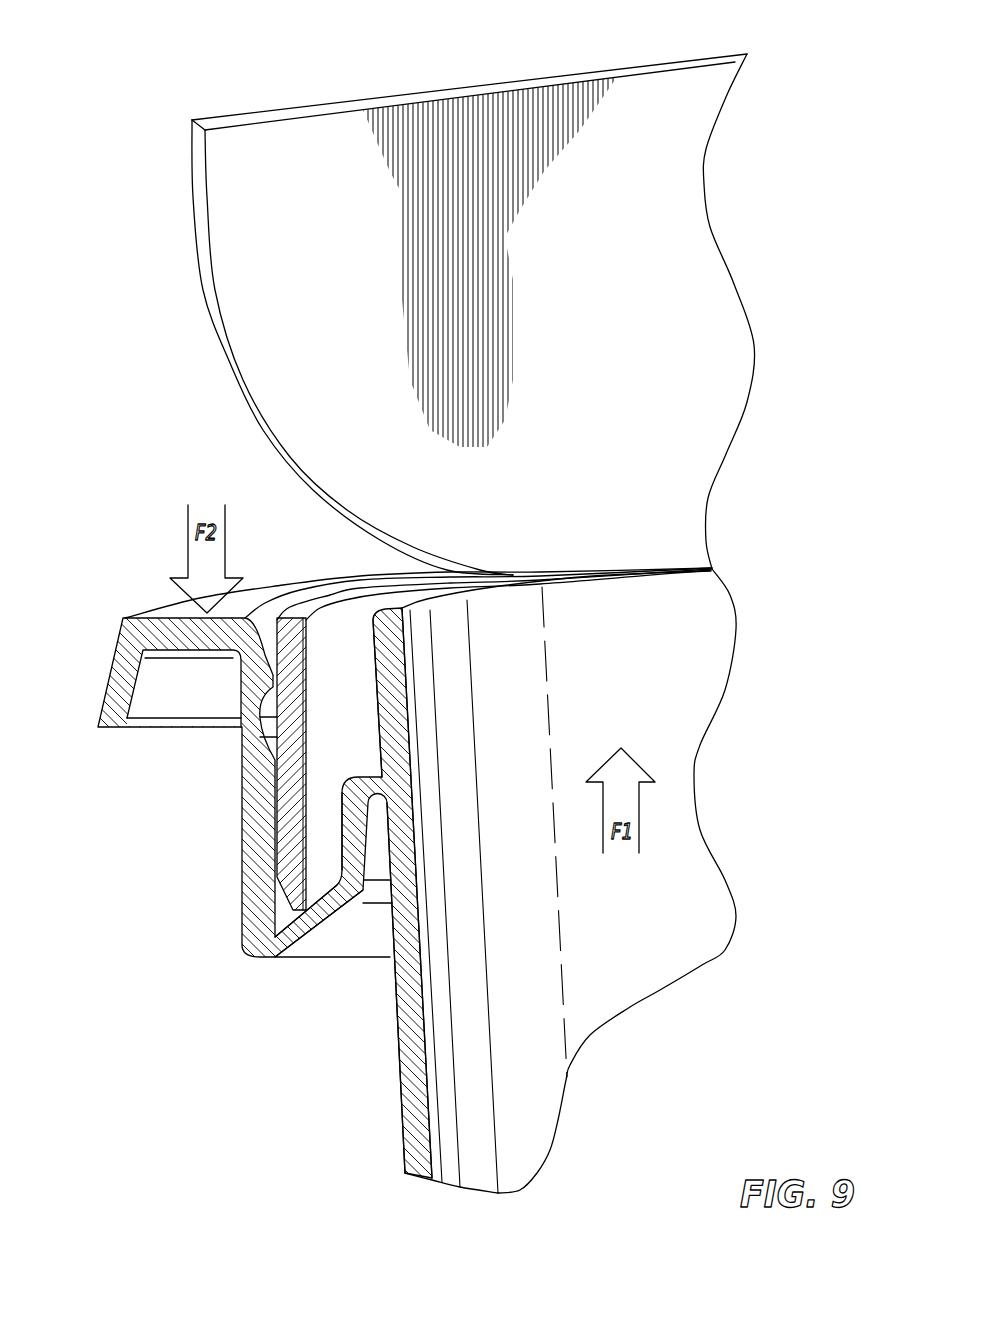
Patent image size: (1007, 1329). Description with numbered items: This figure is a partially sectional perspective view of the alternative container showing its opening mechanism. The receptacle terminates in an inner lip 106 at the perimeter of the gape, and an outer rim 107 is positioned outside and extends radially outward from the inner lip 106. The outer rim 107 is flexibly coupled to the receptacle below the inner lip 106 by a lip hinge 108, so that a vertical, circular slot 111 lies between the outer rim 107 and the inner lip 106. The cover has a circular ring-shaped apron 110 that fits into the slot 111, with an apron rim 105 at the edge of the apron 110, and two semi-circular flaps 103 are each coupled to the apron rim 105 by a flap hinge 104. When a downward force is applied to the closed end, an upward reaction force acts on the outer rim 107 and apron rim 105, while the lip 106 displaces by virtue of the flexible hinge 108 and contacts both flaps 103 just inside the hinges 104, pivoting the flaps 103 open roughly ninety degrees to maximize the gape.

The flap 103 is at (317, 108).
The flap hinge 104 is at (632, 558).
The apron rim 105 is at (307, 612).
The inner lip 106 is at (402, 608).
The outer rim 107 is at (172, 615).
The lip hinge 108 is at (322, 924).
The apron 110 is at (292, 823).
The slot 111 is at (345, 637).